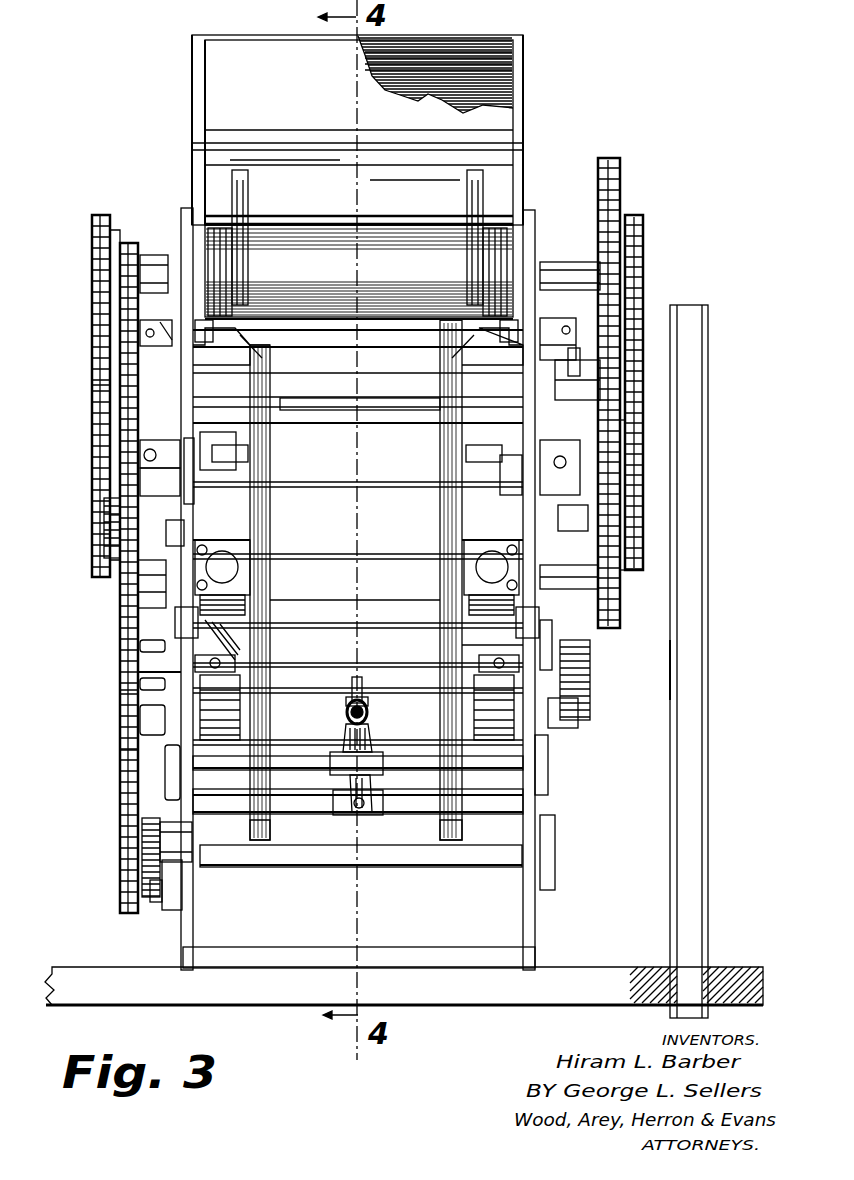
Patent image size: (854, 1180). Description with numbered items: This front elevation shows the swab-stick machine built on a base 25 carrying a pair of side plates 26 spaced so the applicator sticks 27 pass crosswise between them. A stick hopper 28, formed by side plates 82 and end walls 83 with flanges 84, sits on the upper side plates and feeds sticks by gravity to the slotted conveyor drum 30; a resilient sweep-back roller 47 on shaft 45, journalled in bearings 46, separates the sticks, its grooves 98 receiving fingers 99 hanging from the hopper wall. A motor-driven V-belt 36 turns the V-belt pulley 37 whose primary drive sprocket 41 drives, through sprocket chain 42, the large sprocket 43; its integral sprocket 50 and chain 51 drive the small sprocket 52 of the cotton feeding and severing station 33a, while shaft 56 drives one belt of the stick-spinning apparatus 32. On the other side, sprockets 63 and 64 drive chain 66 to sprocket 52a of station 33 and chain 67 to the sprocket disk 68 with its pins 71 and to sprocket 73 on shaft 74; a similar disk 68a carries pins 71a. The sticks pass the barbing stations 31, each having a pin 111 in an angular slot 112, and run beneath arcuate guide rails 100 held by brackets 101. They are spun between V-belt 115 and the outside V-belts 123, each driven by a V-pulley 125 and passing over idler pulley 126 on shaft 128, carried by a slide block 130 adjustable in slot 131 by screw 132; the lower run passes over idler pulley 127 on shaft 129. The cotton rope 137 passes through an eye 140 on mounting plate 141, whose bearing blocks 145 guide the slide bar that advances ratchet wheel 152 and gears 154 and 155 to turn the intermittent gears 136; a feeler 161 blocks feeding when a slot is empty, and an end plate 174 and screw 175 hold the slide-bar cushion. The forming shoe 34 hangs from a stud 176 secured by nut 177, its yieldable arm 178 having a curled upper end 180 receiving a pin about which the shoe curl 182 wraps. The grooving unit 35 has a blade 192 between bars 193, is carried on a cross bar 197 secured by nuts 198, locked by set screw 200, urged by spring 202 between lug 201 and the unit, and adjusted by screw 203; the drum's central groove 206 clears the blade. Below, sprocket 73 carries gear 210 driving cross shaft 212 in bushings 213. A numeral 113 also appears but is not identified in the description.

The base 25 is at (103, 968).
The side plates 26 is at (183, 943).
The applicator sticks 27 is at (513, 82).
The stick hopper 28 is at (486, 50).
The conveyor drum 30 is at (376, 330).
The barbing stations 31 is at (208, 318).
The stick rotating apparatus 32 is at (270, 527).
The winding station 33 is at (188, 628).
The cotton feeding and severing station 33a is at (540, 640).
The forming shoe 34 is at (212, 698).
The grooving unit 35 is at (346, 714).
The V-belt 36 is at (708, 666).
The V-belt pulley 37 is at (708, 416).
The primary drive sprocket 41 is at (615, 580).
The sprocket chain 42 is at (620, 210).
The large sprocket 43 is at (606, 248).
The shaft 45 is at (567, 266).
The bearings 46 is at (181, 228).
The sweep-back roller 47 is at (320, 240).
The integral sprocket 50 is at (643, 287).
The sprocket chain 51 is at (643, 325).
The small sprocket 52 is at (643, 540).
The sprocket 52a is at (96, 533).
The shaft 56 is at (635, 396).
The sprocket 63 is at (92, 268).
The small drive sprocket 64 is at (136, 256).
The sprocket chain 66 is at (92, 384).
The sprocket chain 67 is at (120, 316).
The sprocket disk 68 is at (120, 720).
The disk 68a is at (590, 666).
The pins 71 is at (160, 730).
The pins 71a is at (572, 735).
The sprocket 73 is at (120, 878).
The shaft 74 is at (180, 845).
The side plates 82 is at (192, 100).
The end walls 83 is at (262, 52).
The flanges 84 is at (207, 104).
The grooves 98 is at (246, 272).
The fingers 99 is at (247, 200).
The arcuate guide rails 100 is at (255, 672).
The brackets 101 is at (220, 368).
The pin 111 is at (158, 325).
The angular slot 112 is at (549, 326).
The latch arm 113 is at (575, 352).
The V-belt 115 is at (440, 340).
The outside V-belts 123 is at (440, 358).
The V-pulley 125 is at (270, 362).
The idler pulley 126 is at (270, 452).
The idler pulley 127 is at (270, 826).
The shaft 128 is at (360, 454).
The shaft 129 is at (400, 816).
The slide block 130 is at (189, 484).
The slot 131 is at (205, 462).
The screw 132 is at (530, 455).
The intermittent gears 136 is at (270, 512).
The cotton rope 137 is at (205, 566).
The eye 140 is at (250, 548).
The mounting plate 141 is at (548, 640).
The bearing blocks 145 is at (520, 470).
The ratchet wheel 152 is at (172, 540).
The gear 154 is at (104, 510).
The gear 155 is at (120, 597).
The feeler 161 is at (270, 472).
The end plate 174 is at (160, 480).
The screw 175 is at (160, 450).
The stud 176 is at (205, 668).
The nut 177 is at (138, 677).
The vertical arm 178 is at (462, 645).
The curled upper end 180 is at (250, 620).
The curl 182 is at (245, 632).
The grooving blade 192 is at (360, 680).
The bars 193 is at (346, 702).
The cross bar 197 is at (410, 758).
The nuts 198 is at (168, 775).
The set screw 200 is at (372, 815).
The lug 201 is at (340, 748).
The spring 202 is at (367, 716).
The adjustment screw 203 is at (340, 815).
The groove 206 is at (355, 598).
The gear 210 is at (152, 902).
The cross shaft 212 is at (458, 867).
The bushings 213 is at (182, 898).